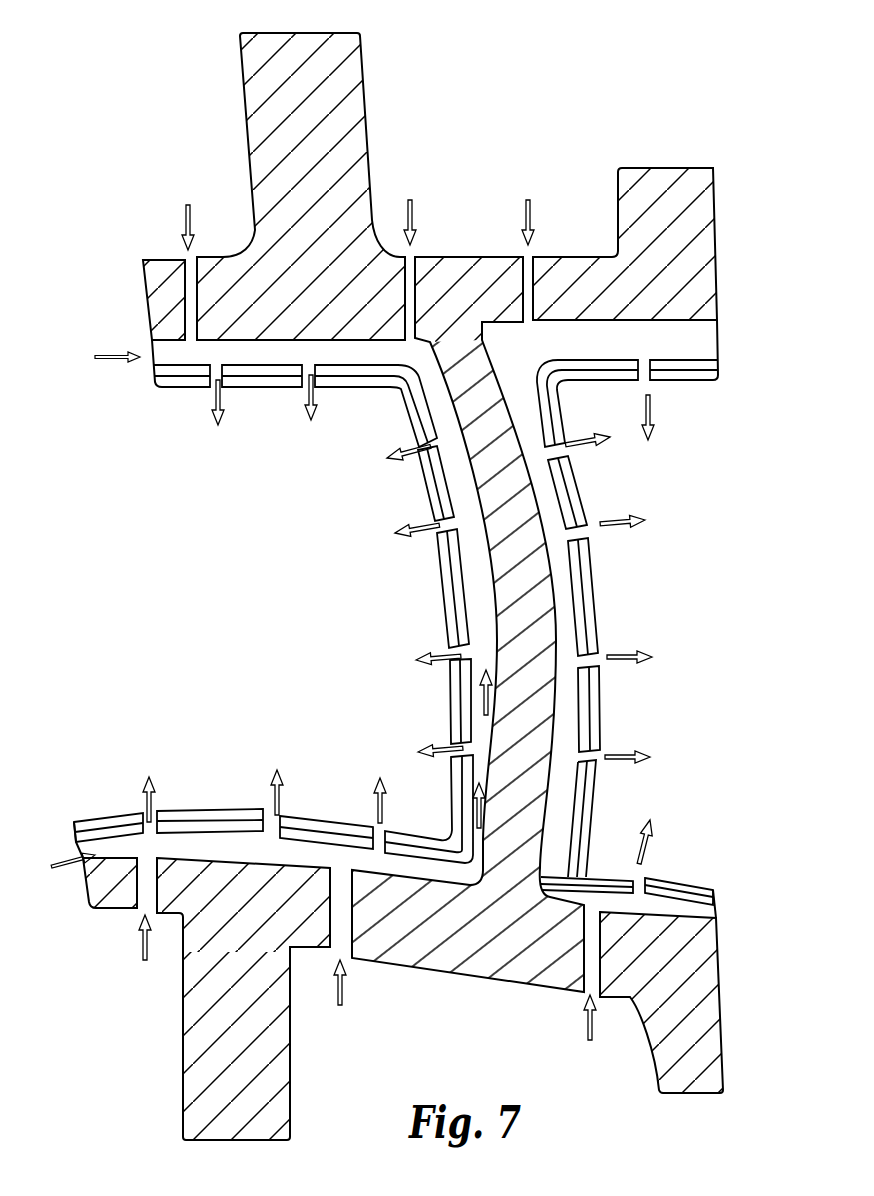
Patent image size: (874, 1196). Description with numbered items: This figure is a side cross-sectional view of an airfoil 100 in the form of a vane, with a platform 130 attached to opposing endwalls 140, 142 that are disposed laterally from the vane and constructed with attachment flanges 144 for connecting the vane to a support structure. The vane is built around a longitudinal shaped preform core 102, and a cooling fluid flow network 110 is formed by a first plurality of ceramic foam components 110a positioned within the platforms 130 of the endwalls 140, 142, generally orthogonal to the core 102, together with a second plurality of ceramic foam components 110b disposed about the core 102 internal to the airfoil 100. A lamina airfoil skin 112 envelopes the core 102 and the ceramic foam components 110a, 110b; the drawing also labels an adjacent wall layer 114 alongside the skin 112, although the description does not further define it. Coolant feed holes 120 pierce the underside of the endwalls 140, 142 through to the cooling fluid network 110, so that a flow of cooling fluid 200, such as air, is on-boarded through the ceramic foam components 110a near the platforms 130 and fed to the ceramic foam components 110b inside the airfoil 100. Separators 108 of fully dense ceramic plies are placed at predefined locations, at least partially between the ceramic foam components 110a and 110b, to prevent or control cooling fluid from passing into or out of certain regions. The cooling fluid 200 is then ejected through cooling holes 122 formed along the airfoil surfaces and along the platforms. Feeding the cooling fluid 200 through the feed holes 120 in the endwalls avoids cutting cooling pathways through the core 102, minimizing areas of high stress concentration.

The airfoil 100 is at (112, 348).
The longitudinal shaped preform core 102 is at (510, 613).
The separators 108 is at (475, 372).
The cooling fluid flow network 110 is at (330, 558).
The first plurality of ceramic foam components 110a is at (240, 366).
The second plurality of ceramic foam components 110b is at (478, 605).
The lamina airfoil skin 112 is at (712, 383).
The wall surface 114 is at (690, 385).
The coolant feed holes 120 is at (185, 258).
The cooling holes 122 is at (212, 395).
The platform 130 is at (136, 311).
The endwall 140 is at (719, 958).
The endwall 142 is at (720, 266).
The attachment flanges 144 is at (375, 102).
The cooling fluid flow 200 is at (190, 205).